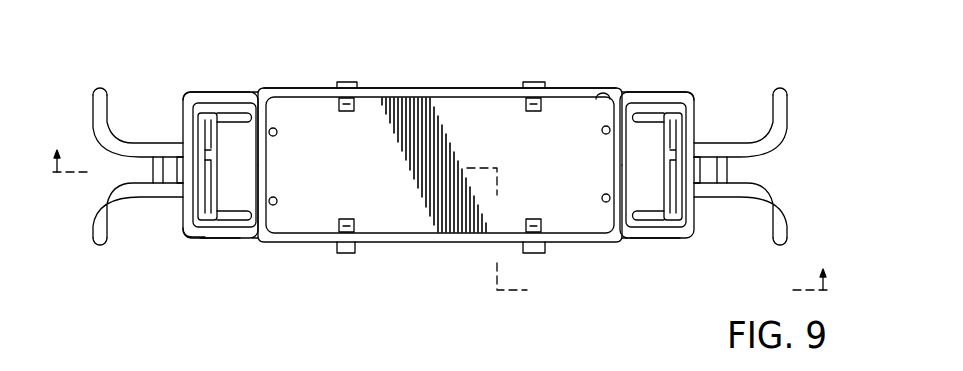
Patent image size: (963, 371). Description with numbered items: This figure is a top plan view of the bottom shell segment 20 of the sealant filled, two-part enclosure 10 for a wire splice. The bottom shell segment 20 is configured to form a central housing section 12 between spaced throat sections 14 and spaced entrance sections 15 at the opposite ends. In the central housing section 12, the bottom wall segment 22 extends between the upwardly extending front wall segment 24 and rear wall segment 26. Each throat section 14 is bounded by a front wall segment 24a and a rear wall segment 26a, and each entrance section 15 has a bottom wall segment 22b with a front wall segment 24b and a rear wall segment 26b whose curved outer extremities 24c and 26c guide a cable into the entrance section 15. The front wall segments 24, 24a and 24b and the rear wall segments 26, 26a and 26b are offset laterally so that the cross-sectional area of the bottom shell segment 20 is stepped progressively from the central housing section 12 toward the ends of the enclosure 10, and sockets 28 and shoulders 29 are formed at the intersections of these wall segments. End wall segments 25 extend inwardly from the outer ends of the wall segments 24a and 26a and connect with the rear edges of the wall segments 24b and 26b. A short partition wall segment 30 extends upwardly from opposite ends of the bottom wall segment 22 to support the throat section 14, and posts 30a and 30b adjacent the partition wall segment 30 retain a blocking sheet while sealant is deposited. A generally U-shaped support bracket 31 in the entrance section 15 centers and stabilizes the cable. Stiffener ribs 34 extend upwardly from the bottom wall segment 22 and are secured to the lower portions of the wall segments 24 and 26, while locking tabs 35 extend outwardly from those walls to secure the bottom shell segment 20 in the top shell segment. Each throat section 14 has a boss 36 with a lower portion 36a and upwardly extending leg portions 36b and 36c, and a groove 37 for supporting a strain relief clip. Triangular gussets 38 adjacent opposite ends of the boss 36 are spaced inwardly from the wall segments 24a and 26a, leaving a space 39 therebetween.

The enclosure 10 is at (440, 235).
The central housing section 12 is at (319, 88).
The throat section 14 is at (228, 90).
The entrance section 15 is at (147, 135).
The bottom shell segment 20 is at (399, 89).
The bottom wall segment 22 is at (462, 138).
The bottom wall segment 22b is at (113, 160).
The front wall segment 24 is at (475, 235).
The front wall segment 24a is at (207, 238).
The front wall segment 24b is at (135, 190).
The curved outer extremity 24c is at (97, 212).
The end wall segment 25 is at (695, 112).
The rear wall segment 26 is at (450, 93).
The rear wall segment 26a is at (212, 92).
The rear wall segment 26b is at (110, 105).
The curved outer extremity 26c is at (783, 132).
The socket 28 is at (273, 103).
The shoulder 29 is at (259, 90).
The partition wall segment 30 is at (279, 136).
The post 30a is at (600, 198).
The post 30b is at (600, 130).
The support bracket 31 is at (727, 170).
The stiffener rib 34 is at (354, 110).
The locking tab 35 is at (357, 252).
The boss 36 is at (215, 230).
The lower portion 36a is at (182, 232).
The leg portion 36b is at (192, 238).
The leg portion 36c is at (197, 105).
The groove 37 is at (217, 190).
The gusset 38 is at (238, 116).
The space 39 is at (698, 108).